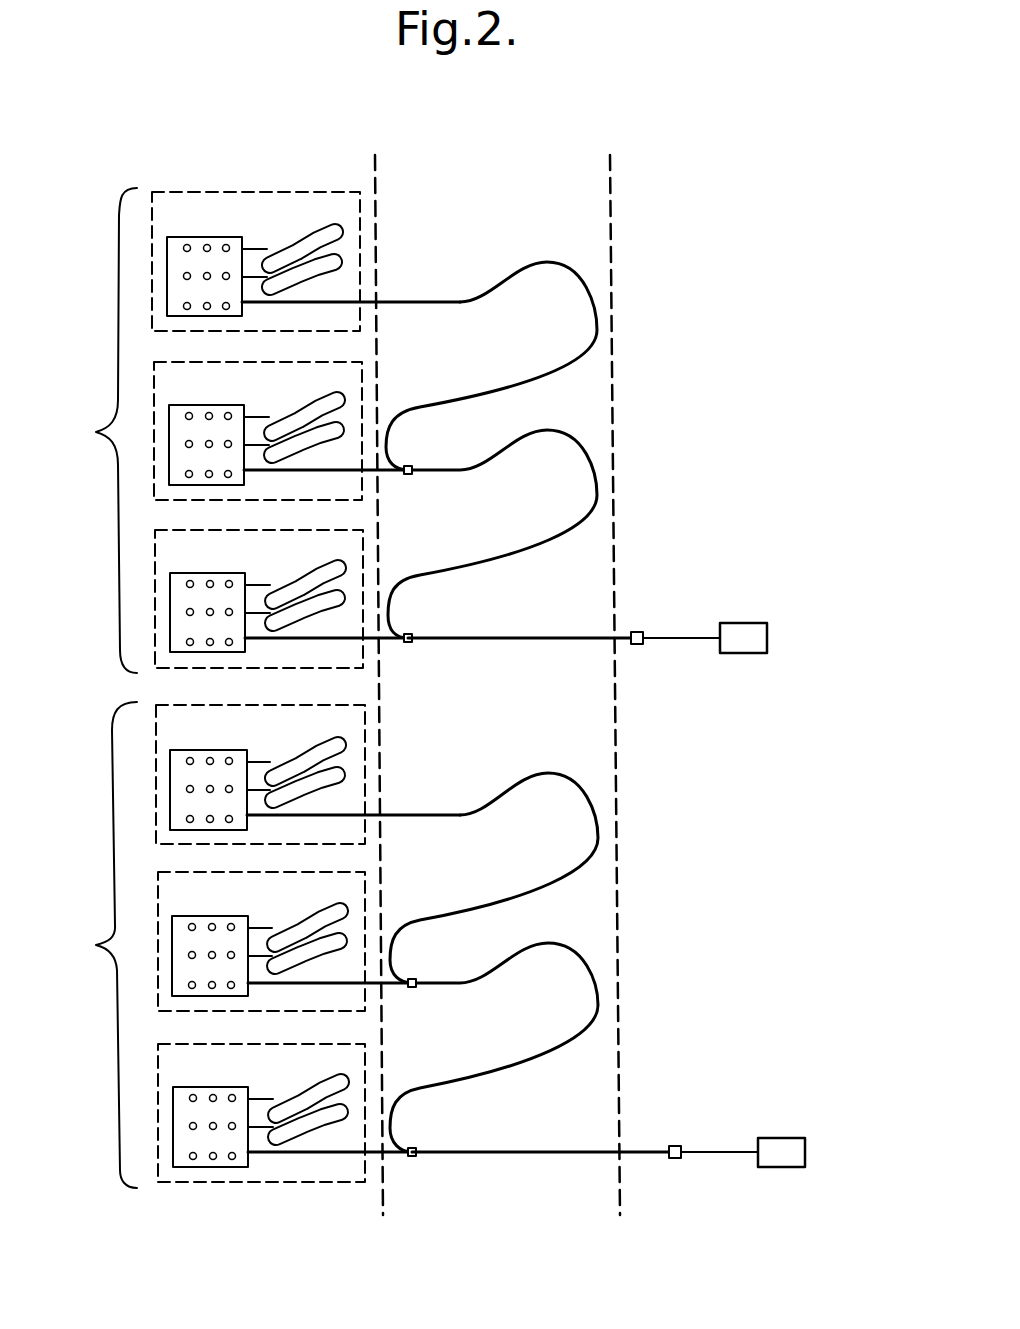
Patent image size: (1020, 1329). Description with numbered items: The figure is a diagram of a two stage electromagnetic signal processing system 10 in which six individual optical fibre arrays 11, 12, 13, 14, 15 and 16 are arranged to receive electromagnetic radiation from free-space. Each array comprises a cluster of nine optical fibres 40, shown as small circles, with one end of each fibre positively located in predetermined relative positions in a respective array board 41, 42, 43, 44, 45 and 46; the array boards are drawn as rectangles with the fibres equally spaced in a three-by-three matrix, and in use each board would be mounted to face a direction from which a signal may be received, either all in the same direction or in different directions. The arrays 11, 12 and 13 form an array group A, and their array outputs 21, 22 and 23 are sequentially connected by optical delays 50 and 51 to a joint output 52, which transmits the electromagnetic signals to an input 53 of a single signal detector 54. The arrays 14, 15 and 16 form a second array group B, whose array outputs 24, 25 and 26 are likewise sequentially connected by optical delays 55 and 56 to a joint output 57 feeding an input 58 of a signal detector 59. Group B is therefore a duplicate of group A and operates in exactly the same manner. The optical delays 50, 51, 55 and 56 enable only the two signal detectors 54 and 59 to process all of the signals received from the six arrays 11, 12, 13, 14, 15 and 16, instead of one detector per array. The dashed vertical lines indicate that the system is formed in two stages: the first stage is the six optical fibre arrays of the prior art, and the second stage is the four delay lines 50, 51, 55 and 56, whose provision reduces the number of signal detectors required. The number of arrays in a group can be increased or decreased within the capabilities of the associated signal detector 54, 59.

The electronic signal processing system 10 is at (762, 378).
The optical fibre array 11 is at (222, 228).
The optical fibre array 12 is at (224, 398).
The optical fibre array 13 is at (225, 566).
The optical fibre array 14 is at (226, 741).
The optical fibre array 15 is at (228, 908).
The optical fibre array 16 is at (228, 1080).
The array output 21 is at (412, 302).
The array output 22 is at (408, 474).
The array output 23 is at (408, 642).
The array output 24 is at (392, 818).
The array output 25 is at (412, 987).
The array output 26 is at (410, 1156).
The optical fibres 40 is at (213, 1157).
The array board 41 is at (178, 258).
The array board 42 is at (180, 418).
The array board 43 is at (178, 604).
The array board 44 is at (178, 777).
The array board 45 is at (180, 922).
The array board 46 is at (180, 1108).
The optical delay 50 is at (597, 330).
The optical delay 51 is at (597, 492).
The joint output 52 is at (560, 638).
The input 53 is at (680, 638).
The signal detector 54 is at (768, 632).
The optical delay 55 is at (597, 838).
The optical delay 56 is at (597, 1010).
The joint output 57 is at (545, 1152).
The input 58 is at (712, 1152).
The signal detector 59 is at (806, 1152).